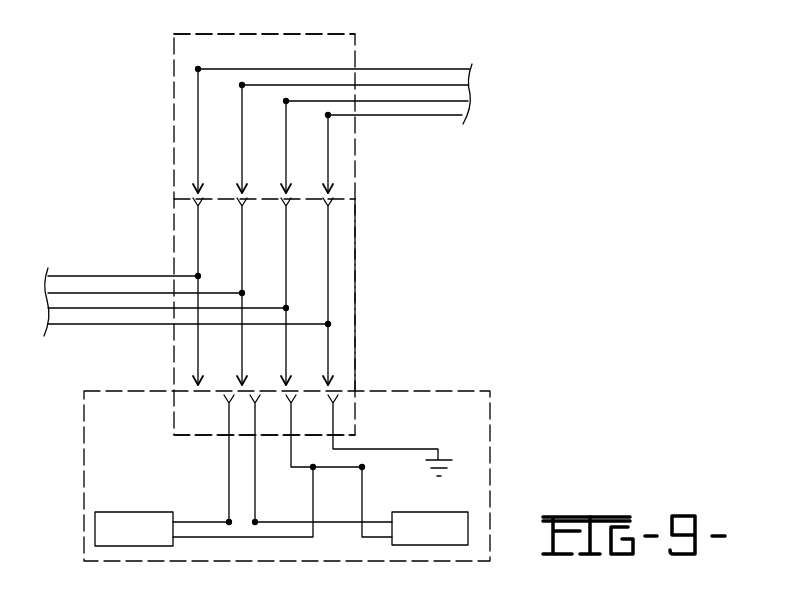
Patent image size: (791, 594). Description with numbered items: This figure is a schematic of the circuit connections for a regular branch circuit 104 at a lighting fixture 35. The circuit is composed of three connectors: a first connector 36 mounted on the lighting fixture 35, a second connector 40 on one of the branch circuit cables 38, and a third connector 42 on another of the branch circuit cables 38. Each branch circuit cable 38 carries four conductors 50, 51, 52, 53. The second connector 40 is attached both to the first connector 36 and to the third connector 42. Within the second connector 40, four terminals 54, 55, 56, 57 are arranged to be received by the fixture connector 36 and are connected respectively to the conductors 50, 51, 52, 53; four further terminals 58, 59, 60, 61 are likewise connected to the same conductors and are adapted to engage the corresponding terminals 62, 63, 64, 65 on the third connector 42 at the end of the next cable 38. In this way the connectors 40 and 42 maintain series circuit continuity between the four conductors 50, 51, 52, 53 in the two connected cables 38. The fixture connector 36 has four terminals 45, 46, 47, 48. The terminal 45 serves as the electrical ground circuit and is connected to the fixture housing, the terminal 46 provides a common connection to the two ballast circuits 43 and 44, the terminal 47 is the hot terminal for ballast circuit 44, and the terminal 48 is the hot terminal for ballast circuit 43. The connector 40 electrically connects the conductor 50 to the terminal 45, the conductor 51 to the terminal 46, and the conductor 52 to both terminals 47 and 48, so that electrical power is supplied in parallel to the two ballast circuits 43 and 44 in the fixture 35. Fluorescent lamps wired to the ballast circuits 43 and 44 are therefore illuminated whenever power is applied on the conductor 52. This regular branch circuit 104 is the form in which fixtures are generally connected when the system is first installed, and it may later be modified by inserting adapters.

The regular branch circuit 104 is at (165, 57).
The third connector 42 is at (318, 34).
The second connector 40 is at (358, 265).
The first connector 36 is at (357, 430).
The lighting fixture 35 is at (434, 389).
The branch circuit cable 38 is at (406, 52).
The conductor 53 is at (450, 67).
The conductor 52 is at (413, 84).
The conductor 51 is at (425, 98).
The conductor 50 is at (446, 118).
The terminal 65 is at (214, 178).
The terminal 64 is at (258, 178).
The terminal 63 is at (288, 190).
The terminal 62 is at (336, 192).
The terminal 61 is at (199, 207).
The terminal 60 is at (243, 207).
The terminal 59 is at (287, 207).
The terminal 58 is at (333, 205).
The terminal 57 is at (230, 370).
The terminal 56 is at (274, 370).
The terminal 55 is at (318, 370).
The terminal 54 is at (336, 383).
The terminal 48 is at (226, 402).
The terminal 47 is at (256, 404).
The terminal 46 is at (292, 404).
The terminal 45 is at (338, 400).
The ballast circuit 43 is at (152, 494).
The ballast circuit 44 is at (430, 491).